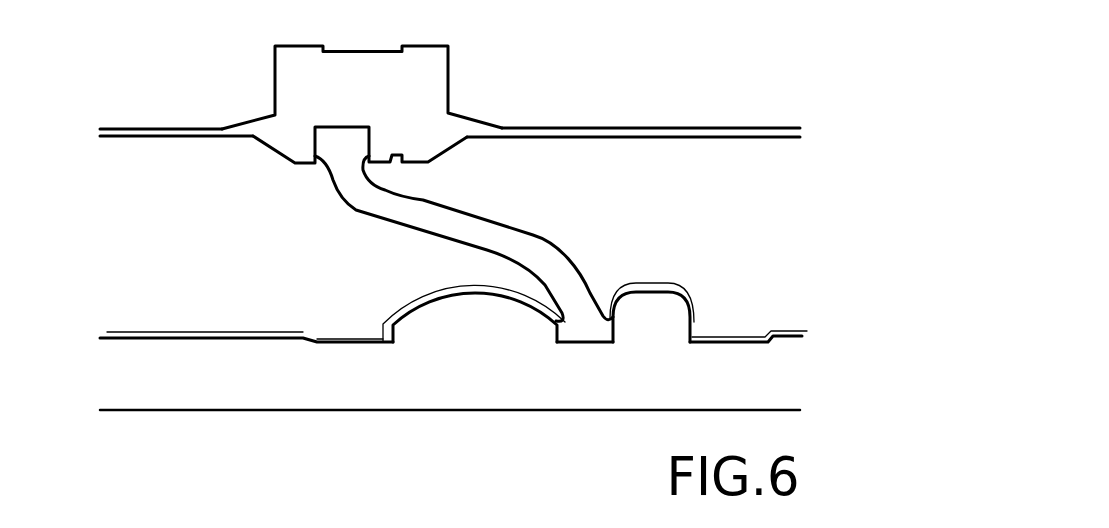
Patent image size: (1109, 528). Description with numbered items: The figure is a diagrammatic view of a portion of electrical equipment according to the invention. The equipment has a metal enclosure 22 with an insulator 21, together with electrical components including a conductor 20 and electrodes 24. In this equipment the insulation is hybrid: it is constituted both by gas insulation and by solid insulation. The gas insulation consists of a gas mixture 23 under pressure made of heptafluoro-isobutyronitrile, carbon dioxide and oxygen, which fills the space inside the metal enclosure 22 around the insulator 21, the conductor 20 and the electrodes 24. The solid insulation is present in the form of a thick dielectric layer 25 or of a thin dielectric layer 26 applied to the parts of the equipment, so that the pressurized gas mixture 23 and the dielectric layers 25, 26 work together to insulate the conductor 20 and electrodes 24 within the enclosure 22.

The conductor 20 is at (223, 387).
The insulator 21 is at (518, 238).
The metal enclosure 22 is at (273, 132).
The gas mixture 23 is at (730, 170).
The electrodes 24 is at (472, 320).
The thick dielectric layer 25 is at (418, 302).
The thin dielectric layer 26 is at (153, 333).